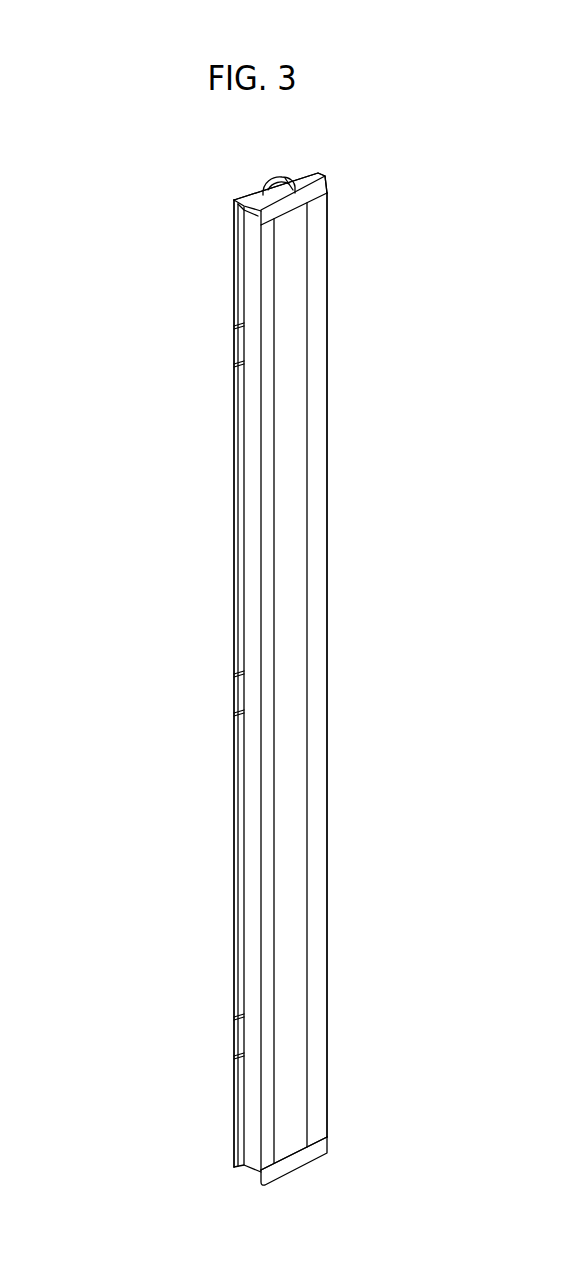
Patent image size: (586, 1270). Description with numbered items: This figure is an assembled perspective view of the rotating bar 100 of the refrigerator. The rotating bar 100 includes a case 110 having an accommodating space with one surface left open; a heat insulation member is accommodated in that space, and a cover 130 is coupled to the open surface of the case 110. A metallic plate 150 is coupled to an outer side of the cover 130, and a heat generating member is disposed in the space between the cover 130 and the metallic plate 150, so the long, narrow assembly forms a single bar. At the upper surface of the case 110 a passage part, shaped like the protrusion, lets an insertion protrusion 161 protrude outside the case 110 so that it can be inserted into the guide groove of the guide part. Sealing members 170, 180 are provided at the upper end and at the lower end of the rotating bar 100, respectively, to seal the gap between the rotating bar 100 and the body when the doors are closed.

The rotating bar 100 is at (144, 190).
The case 110 is at (233, 233).
The cover 130 is at (322, 217).
The metallic plate 150 is at (300, 267).
The insertion protrusion 161 is at (273, 178).
The sealing member 170 is at (330, 175).
The sealing member 180 is at (327, 1140).